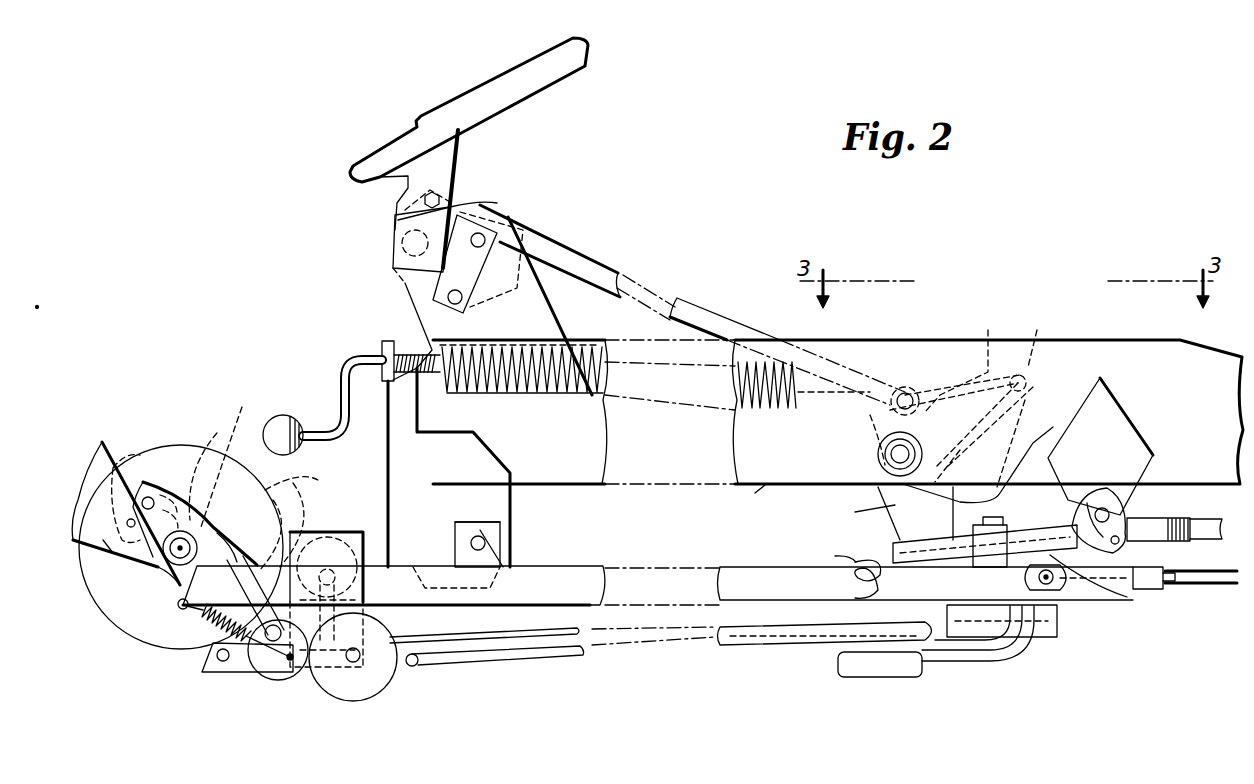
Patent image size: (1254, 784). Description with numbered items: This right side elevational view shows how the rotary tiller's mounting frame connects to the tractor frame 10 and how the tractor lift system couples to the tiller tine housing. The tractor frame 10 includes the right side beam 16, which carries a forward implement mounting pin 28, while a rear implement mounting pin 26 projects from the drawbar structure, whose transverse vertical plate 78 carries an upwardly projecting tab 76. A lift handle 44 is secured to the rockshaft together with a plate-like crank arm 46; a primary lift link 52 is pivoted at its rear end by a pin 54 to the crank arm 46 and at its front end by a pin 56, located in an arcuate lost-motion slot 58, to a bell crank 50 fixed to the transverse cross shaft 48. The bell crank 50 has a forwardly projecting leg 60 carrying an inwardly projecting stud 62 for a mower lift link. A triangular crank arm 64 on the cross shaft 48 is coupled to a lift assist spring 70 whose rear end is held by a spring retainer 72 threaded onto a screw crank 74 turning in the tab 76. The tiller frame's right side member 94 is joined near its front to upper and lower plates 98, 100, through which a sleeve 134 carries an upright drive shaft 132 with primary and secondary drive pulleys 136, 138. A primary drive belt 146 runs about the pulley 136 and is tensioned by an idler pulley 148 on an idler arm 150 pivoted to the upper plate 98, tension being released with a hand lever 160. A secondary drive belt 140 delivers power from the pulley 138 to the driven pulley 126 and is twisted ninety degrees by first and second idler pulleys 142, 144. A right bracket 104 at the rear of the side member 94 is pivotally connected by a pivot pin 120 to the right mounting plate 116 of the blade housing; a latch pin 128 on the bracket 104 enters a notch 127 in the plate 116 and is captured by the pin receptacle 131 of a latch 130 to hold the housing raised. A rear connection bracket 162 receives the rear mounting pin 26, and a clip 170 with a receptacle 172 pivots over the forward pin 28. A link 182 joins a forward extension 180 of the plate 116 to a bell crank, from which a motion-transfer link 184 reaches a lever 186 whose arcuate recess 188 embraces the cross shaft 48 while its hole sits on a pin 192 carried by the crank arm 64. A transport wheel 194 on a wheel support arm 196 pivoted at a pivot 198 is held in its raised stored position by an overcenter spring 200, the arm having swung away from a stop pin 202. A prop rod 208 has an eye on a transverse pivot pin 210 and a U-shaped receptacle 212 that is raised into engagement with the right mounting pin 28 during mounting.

The tractor frame 10 is at (1108, 340).
The right side beam 16 is at (757, 494).
The rear implement mounting pins 26 is at (471, 545).
The forward implement mounting pins 28 is at (1102, 507).
The lift handle 44 is at (563, 92).
The crank arm 46 is at (450, 203).
The cross shaft 48 is at (890, 455).
The bell crank 50 is at (875, 422).
The primary lift link 52 is at (582, 255).
The pin 54 is at (486, 262).
The pin 56 is at (905, 390).
The lost-motion slot 58 is at (940, 400).
The forwardly projecting leg 60 is at (988, 336).
The pin or stud 62 is at (1037, 333).
The crank arm 64 is at (1003, 490).
The lift assist spring 70 is at (742, 418).
The spring retainer 72 is at (442, 380).
The screw crank 74 is at (360, 350).
The tab 76 is at (388, 341).
The transverse vertical plate 78 is at (388, 468).
The right side member 94 is at (575, 578).
The upper plate 98 is at (955, 545).
The lower plate 100 is at (1055, 650).
The right bracket 104 is at (110, 600).
The right mounting plate 116 is at (115, 553).
The pivot pin 120 is at (185, 543).
The driven pulley 126 is at (232, 507).
The pin receptacle or notch 127 is at (145, 495).
The latch pin 128 is at (153, 494).
The latch 130 is at (200, 458).
The pin receptacle 131 is at (233, 456).
The upright drive shaft 132 is at (1019, 476).
The sleeve 134 is at (1065, 585).
The primary drive pulley 136 is at (1075, 504).
The secondary drive pulley 138 is at (1048, 665).
The secondary drive belt 140 is at (822, 654).
The first idler pulley 142 is at (293, 490).
The second idler pulley 144 is at (268, 688).
The primary drive belt 146 is at (1192, 519).
The idler pulley 148 is at (1177, 520).
The idler arm 150 is at (1170, 573).
The hand lever 160 is at (967, 670).
The rear connection brackets 162 is at (477, 522).
The latches or clips 170 is at (1115, 488).
The receptacles 172 is at (1148, 587).
The forward extension 180 is at (286, 452).
The link 182 is at (314, 476).
The motion-transfer link 184 is at (525, 659).
The lever 186 is at (895, 507).
The arcuate recess 188 is at (855, 485).
The pin 192 is at (984, 434).
The transport wheels 194 is at (340, 695).
The wheel support arms 196 is at (230, 668).
The pivots 198 is at (220, 668).
The overcenter springs 200 is at (208, 632).
The stop pins 202 is at (182, 613).
The prop rod 208 is at (792, 553).
The transverse pivot pin 210 is at (1050, 585).
The receptacle 212 is at (850, 580).